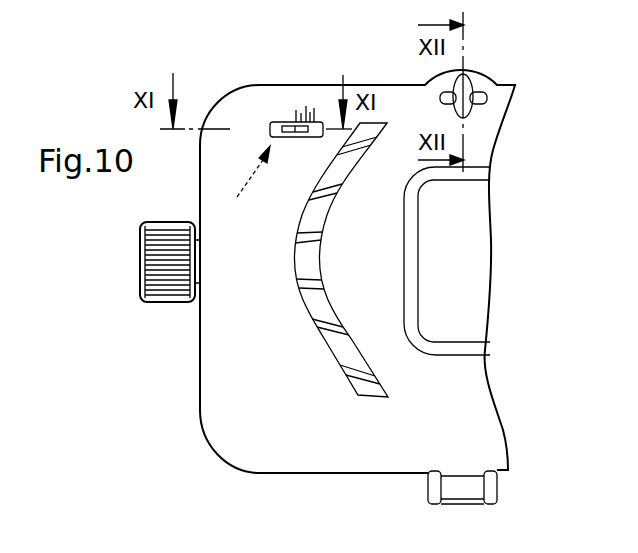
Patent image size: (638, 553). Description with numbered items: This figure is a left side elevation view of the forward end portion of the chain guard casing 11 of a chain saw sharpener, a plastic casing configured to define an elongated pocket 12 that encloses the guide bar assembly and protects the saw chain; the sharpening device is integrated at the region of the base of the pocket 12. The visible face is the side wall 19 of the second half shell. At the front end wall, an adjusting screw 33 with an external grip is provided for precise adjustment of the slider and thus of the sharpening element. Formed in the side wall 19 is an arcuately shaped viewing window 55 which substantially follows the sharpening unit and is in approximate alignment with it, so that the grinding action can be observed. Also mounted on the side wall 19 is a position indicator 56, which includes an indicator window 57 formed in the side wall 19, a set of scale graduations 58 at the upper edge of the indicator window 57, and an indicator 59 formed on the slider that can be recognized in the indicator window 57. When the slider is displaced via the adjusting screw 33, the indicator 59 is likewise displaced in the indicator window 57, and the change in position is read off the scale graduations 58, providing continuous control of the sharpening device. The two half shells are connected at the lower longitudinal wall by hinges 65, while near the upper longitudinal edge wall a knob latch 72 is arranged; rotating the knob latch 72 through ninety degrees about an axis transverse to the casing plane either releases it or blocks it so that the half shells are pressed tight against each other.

The chain guard casing 11 is at (237, 471).
The pocket 12 is at (383, 464).
The side wall 19 is at (210, 412).
The adjusting screw 33 is at (170, 222).
The viewing window 55 is at (308, 306).
The position indicator 56 is at (245, 188).
The indicator window 57 is at (276, 123).
The scale graduations 58 is at (312, 110).
The indicator 59 is at (300, 137).
The hinges 65 is at (466, 492).
The knob latch 72 is at (470, 81).